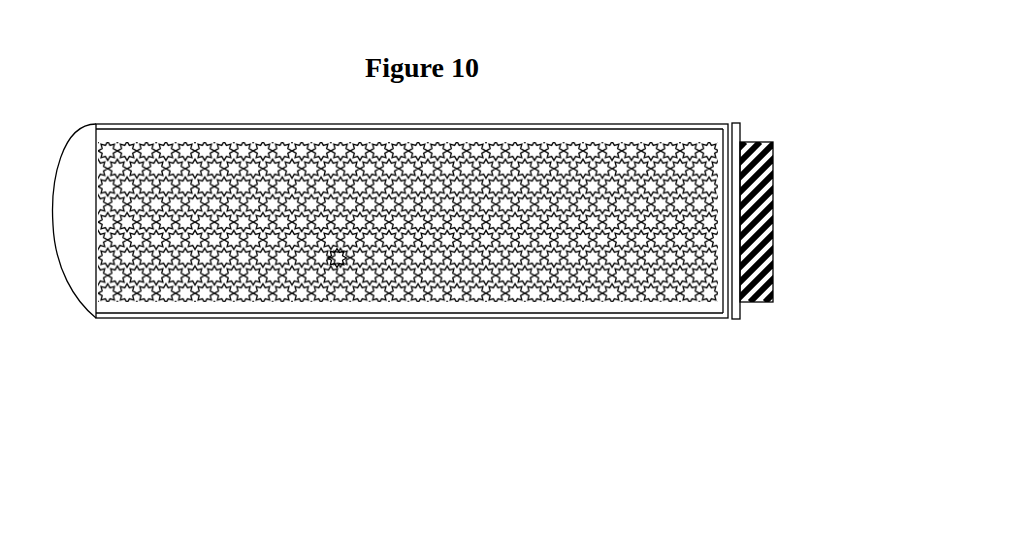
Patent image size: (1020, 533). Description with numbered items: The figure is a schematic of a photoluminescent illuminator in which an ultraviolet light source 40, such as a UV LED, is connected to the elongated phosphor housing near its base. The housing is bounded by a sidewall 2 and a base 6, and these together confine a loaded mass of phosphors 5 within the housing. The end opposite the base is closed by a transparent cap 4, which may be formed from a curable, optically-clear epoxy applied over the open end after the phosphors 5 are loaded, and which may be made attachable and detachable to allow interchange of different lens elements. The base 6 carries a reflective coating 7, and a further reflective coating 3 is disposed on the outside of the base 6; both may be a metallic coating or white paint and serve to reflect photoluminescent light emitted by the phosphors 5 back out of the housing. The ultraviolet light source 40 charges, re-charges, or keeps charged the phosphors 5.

The sidewall 2 is at (185, 304).
The reflective coating 3 is at (290, 319).
The transparent cap 4 is at (80, 290).
The phosphors 5 is at (337, 255).
The base 6 is at (727, 293).
The reflective coating 7 is at (737, 300).
The ultraviolet light source 40 is at (763, 225).